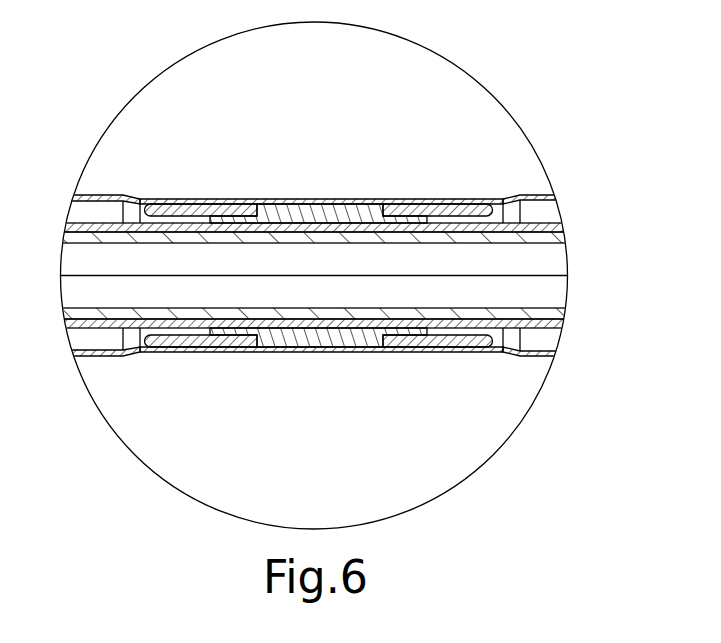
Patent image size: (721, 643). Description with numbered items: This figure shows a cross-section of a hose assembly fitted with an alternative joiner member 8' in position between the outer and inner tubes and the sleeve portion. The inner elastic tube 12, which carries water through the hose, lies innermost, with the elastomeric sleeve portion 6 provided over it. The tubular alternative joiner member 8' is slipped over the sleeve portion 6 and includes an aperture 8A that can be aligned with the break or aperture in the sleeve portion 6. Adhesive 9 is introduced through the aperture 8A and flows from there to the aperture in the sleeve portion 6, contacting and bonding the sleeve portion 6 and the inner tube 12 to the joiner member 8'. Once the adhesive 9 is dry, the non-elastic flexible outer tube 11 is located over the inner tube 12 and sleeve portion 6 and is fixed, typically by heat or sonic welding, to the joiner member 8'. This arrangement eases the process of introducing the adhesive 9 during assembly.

The elastomeric sleeve portion 6 is at (78, 226).
The aperture 8A is at (357, 206).
The alternative joiner member 8' is at (438, 244).
The adhesive 9 is at (282, 203).
The first outer tube 11 is at (529, 197).
The second inner elastic tube 12 is at (548, 238).